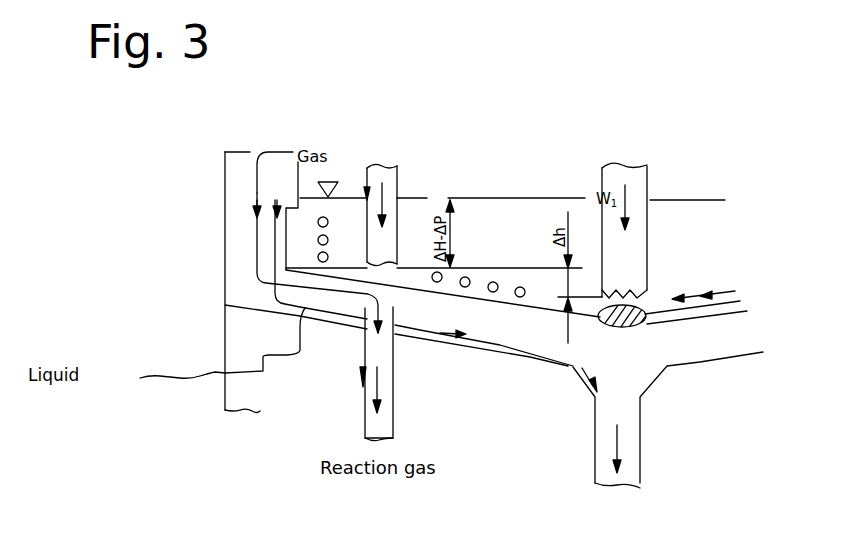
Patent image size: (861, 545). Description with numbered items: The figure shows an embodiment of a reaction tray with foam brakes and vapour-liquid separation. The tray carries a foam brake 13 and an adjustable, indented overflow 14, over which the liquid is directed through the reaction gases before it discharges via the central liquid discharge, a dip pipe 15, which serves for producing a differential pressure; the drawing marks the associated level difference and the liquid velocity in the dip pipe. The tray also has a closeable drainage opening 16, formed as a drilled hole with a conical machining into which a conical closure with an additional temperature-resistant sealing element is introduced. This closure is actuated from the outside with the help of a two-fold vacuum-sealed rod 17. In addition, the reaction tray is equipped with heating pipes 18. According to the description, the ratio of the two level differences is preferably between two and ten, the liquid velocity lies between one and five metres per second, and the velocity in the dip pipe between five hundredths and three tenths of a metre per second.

The foam brake 13 is at (297, 173).
The adjustable, indented overflow 14 is at (297, 198).
The central liquid discharge (dip pipe) 15 is at (641, 434).
The closeable drainage opening 16 is at (643, 330).
The two-fold vacuum-sealed rod 17 is at (750, 304).
The heating pipes 18 is at (494, 289).